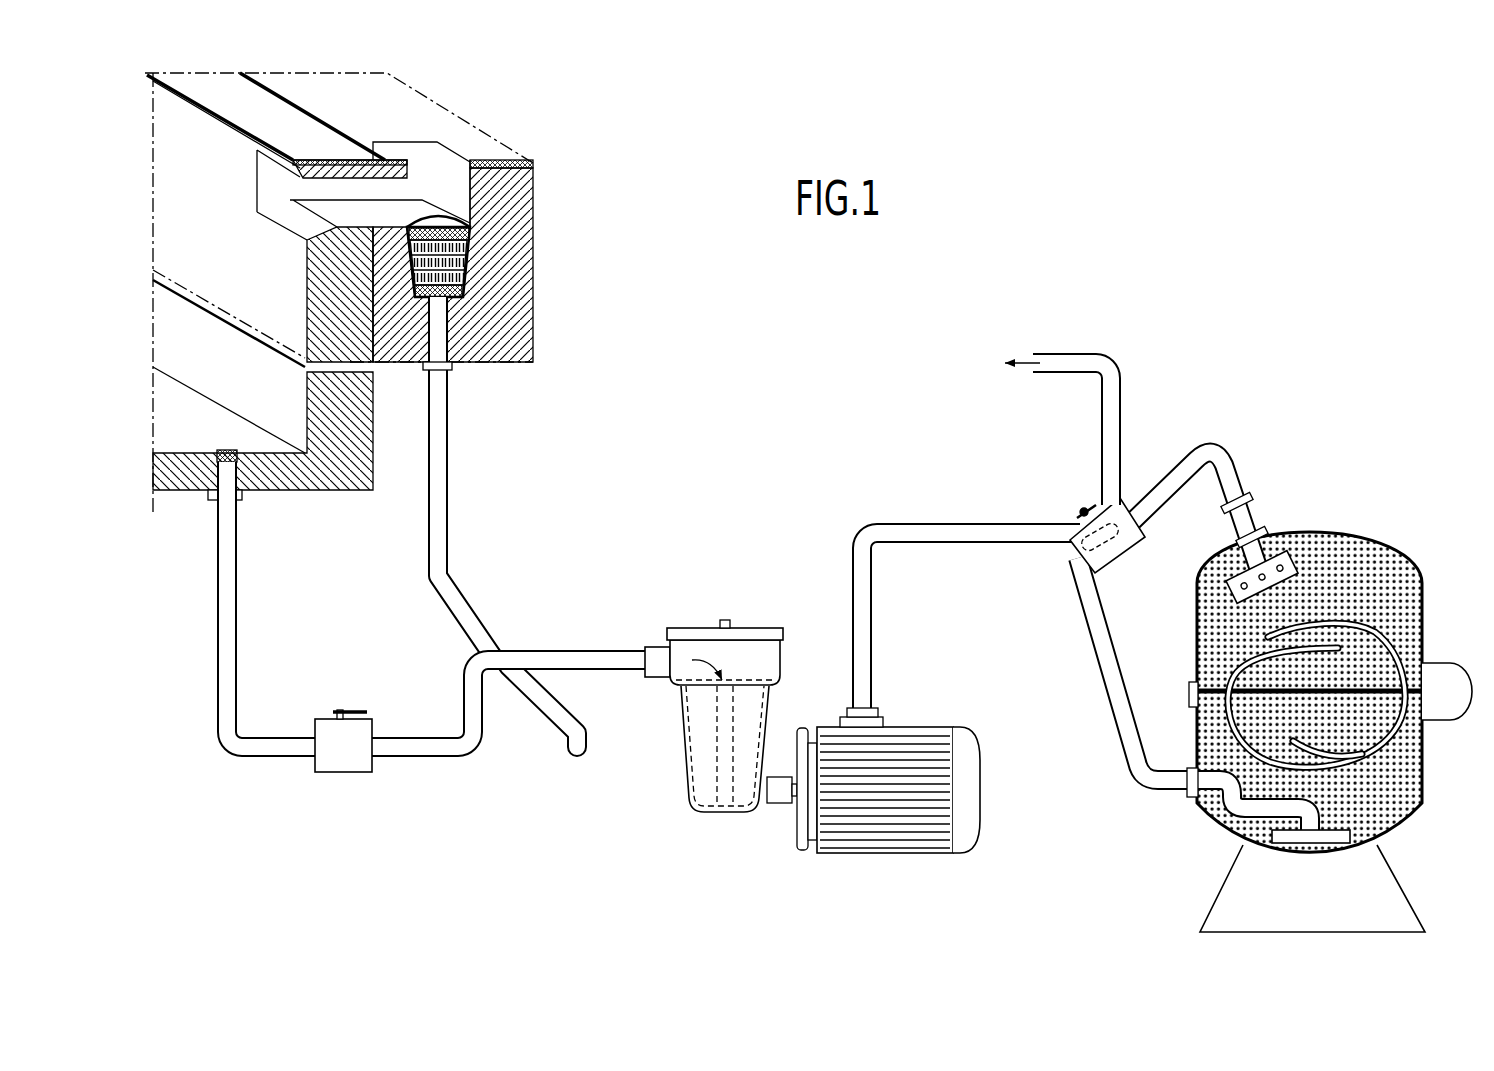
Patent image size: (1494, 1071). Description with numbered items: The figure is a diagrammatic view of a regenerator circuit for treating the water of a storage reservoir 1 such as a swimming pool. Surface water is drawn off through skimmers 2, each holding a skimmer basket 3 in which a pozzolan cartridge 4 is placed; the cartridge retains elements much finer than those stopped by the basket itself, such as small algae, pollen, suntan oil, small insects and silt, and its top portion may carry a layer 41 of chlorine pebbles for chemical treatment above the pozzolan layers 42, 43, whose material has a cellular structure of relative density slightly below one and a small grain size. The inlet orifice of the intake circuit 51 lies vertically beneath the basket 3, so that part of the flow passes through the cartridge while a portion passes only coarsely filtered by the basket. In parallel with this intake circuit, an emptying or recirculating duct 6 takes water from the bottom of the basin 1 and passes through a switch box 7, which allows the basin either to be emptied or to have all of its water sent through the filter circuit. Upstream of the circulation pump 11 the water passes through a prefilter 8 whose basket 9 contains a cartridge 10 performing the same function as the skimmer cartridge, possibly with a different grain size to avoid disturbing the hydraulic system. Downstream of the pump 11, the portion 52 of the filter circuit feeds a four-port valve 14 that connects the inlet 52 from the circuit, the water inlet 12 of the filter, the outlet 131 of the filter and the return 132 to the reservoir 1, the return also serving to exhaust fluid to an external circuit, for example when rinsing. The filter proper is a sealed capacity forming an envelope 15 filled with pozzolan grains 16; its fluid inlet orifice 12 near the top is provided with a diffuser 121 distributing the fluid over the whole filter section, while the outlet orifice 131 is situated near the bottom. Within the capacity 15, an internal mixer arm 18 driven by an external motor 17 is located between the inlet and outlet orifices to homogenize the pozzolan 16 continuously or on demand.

The storage reservoir 1 is at (264, 288).
The skimmer 2 is at (387, 207).
The skimmer basket 3 is at (411, 308).
The pozzolan cartridge 4 is at (521, 253).
The layer of chlorine pebbles 41 is at (470, 232).
The pozzolan layer 42 is at (465, 265).
The pozzolan layer 43 is at (463, 277).
The intake circuit 51 is at (447, 533).
The downstream filter circuit portion 52 is at (983, 531).
The emptying or recirculating duct 6 is at (417, 737).
The switch box 7 is at (338, 763).
The prefilter 8 is at (702, 622).
The prefilter basket 9 is at (680, 743).
The prefilter cartridge 10 is at (722, 801).
The circulation pump 11 is at (988, 769).
The fluid inlet orifice 12 is at (1210, 441).
The diffuser 121 is at (1293, 553).
The outlet orifice 131 is at (1119, 783).
The return 132 is at (1020, 358).
The four-port valve 14 is at (1143, 552).
The sealed filter capacity 15 is at (1430, 571).
The pozzolan grains 16 is at (1348, 655).
The external motor 17 is at (1442, 721).
The internal mixer arm 18 is at (1340, 760).